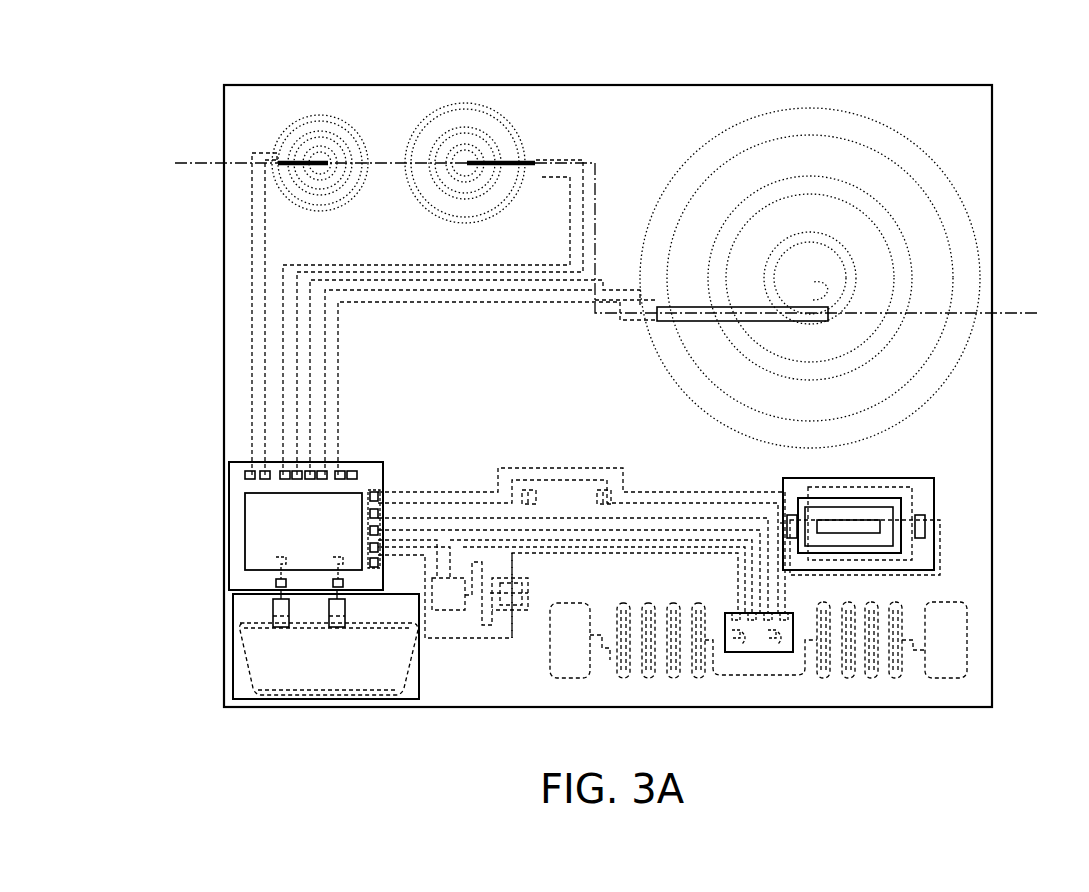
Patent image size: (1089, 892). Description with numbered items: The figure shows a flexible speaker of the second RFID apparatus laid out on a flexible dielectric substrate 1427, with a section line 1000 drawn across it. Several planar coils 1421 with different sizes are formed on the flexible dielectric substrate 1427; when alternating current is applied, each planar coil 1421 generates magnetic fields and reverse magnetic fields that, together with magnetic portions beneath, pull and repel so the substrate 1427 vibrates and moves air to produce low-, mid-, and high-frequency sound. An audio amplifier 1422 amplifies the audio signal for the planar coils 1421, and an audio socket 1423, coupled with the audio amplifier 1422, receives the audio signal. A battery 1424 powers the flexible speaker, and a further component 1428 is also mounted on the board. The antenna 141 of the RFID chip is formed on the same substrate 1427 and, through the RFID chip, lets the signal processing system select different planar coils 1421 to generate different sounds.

The antenna 141 is at (836, 708).
The reference line 1000 is at (183, 163).
The planar coil 1421 is at (320, 94).
The audio amplifier 1422 is at (224, 524).
The audio socket 1423 is at (330, 700).
The battery 1424 is at (883, 535).
The flexible dielectric substrate 1427 is at (983, 128).
The connector component 1428 is at (757, 655).